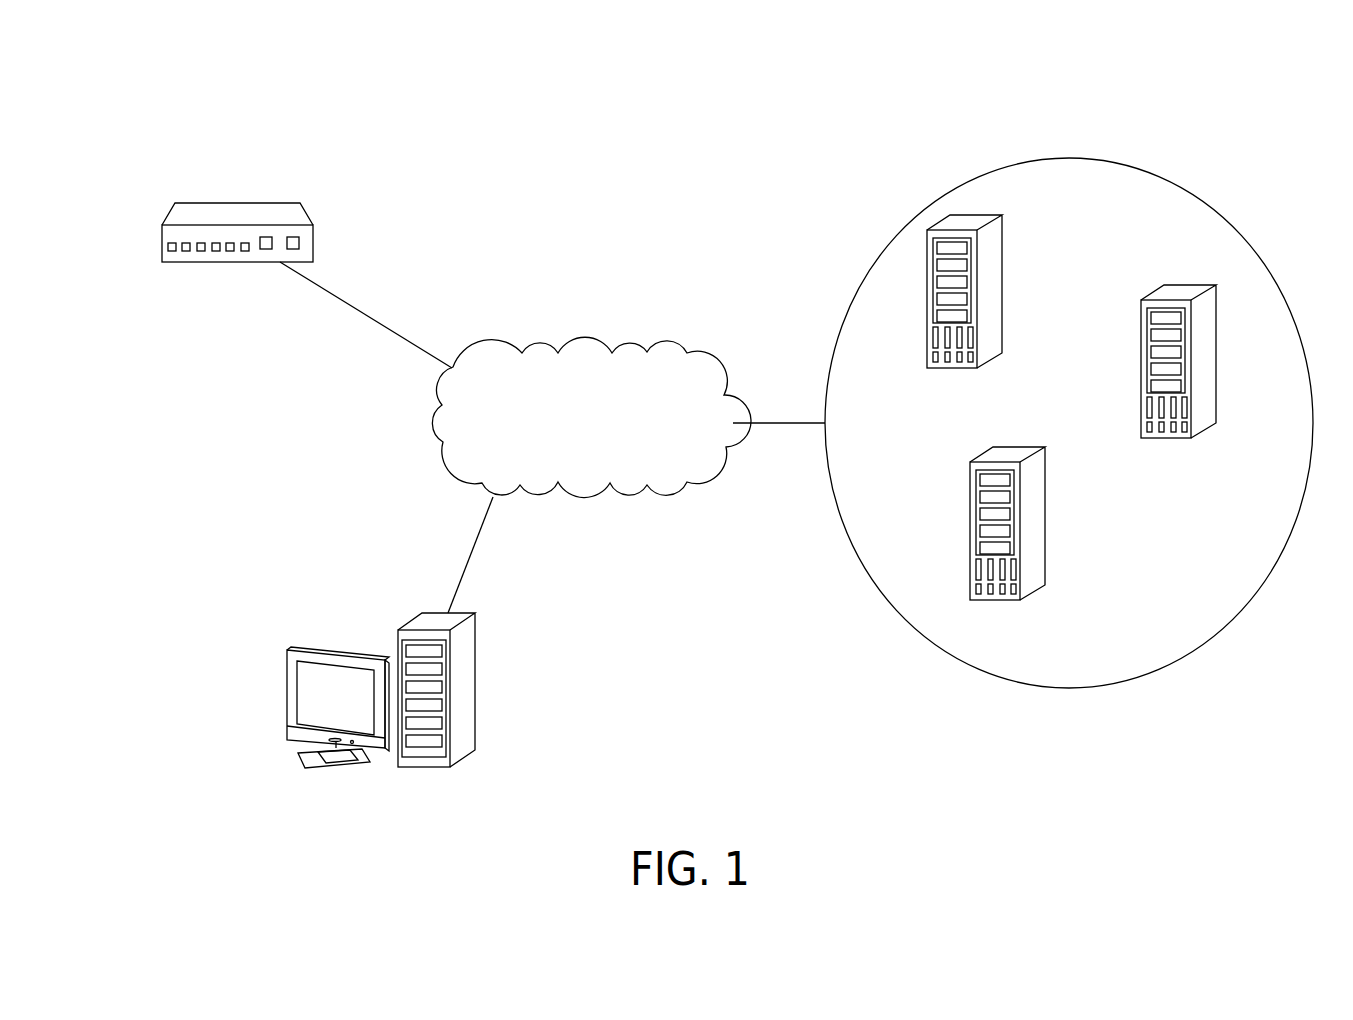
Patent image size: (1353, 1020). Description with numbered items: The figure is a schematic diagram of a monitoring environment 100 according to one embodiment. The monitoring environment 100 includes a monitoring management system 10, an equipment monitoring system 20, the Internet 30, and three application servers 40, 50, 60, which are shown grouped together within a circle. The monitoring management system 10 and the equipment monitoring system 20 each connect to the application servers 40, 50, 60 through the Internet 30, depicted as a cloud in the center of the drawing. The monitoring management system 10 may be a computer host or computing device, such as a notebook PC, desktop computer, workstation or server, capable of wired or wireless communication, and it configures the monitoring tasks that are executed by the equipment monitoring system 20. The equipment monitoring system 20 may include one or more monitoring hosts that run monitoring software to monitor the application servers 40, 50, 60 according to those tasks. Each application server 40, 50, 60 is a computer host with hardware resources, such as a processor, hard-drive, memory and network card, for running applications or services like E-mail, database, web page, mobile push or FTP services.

The monitoring environment 100 is at (710, 138).
The monitoring management system 10 is at (162, 243).
The equipment monitoring system 20 is at (475, 683).
The Internet 30 is at (602, 457).
The application server 40 is at (1002, 283).
The application server 50 is at (1216, 355).
The application server 60 is at (1045, 515).